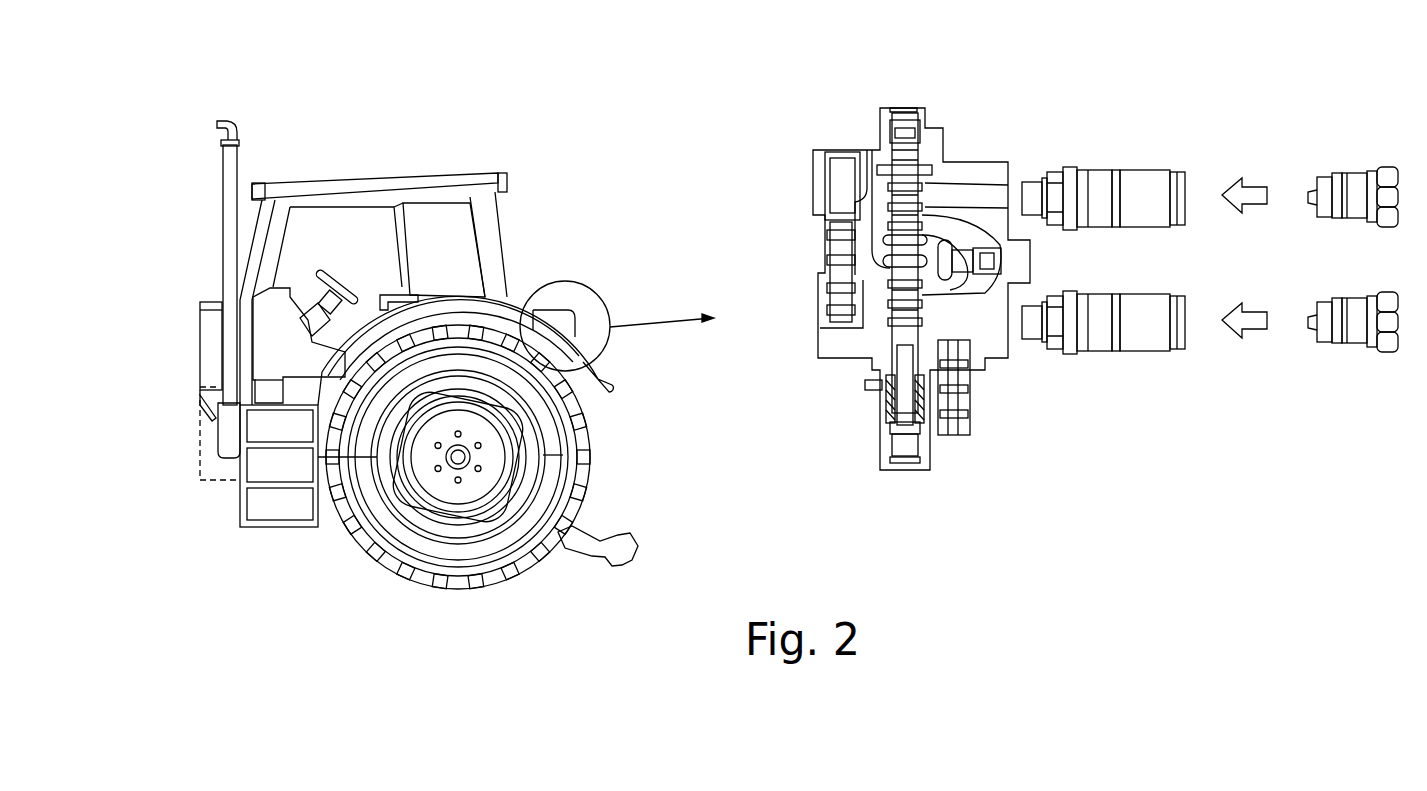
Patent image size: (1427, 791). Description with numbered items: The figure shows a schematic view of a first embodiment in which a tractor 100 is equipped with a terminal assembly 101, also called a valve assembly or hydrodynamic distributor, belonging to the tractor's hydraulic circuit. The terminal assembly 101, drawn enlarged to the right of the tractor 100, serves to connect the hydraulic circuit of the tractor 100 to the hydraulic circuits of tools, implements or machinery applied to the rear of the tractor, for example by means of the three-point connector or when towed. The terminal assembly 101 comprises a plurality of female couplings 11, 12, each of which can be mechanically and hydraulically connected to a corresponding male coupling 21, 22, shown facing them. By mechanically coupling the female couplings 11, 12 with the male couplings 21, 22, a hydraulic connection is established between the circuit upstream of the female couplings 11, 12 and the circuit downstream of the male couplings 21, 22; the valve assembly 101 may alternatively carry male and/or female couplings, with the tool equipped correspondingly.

The tractor 100 is at (198, 195).
The terminal assembly 101 is at (840, 142).
The female coupling 11 is at (1143, 165).
The female coupling 12 is at (1140, 354).
The male coupling 21 is at (1358, 165).
The male coupling 22 is at (1357, 354).